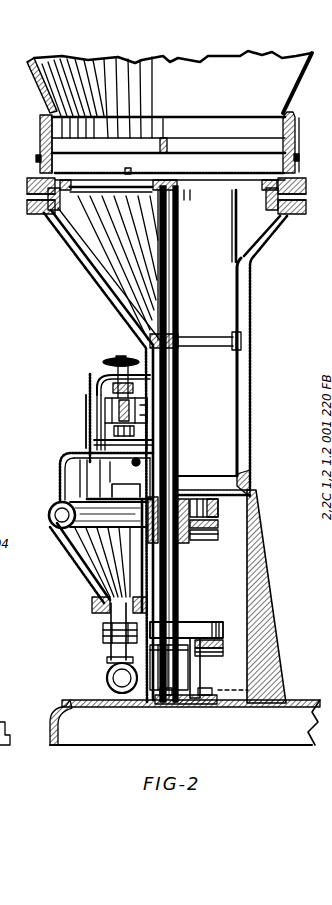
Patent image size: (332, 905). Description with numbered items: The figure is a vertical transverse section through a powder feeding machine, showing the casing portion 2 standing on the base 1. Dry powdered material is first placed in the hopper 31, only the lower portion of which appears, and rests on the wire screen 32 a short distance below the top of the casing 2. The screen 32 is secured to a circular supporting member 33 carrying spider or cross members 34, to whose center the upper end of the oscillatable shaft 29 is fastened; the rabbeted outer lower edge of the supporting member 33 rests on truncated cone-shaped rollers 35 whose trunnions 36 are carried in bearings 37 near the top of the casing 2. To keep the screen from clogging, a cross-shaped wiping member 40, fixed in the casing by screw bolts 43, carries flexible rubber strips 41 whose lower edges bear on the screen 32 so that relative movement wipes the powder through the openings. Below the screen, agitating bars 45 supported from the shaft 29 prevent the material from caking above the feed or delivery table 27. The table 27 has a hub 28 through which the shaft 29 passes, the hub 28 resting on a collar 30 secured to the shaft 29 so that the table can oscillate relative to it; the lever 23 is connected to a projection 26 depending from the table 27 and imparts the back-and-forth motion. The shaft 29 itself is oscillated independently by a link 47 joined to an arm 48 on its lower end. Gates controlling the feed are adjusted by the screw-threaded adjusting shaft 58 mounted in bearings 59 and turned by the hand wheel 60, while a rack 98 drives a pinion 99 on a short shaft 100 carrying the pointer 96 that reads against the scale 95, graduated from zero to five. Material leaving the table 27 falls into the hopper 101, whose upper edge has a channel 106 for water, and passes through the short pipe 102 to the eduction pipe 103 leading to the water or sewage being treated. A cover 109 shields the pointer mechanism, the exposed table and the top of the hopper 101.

The base 1 is at (305, 722).
The casing portion 2 is at (254, 416).
The lever 23 is at (216, 533).
The projection 26 is at (217, 512).
The feed or delivery table 27 is at (110, 497).
The hub 28 is at (145, 532).
The oscillatable shaft 29 is at (178, 412).
The collar 30 is at (183, 541).
The hopper 31 is at (33, 78).
The screen 32 is at (218, 181).
The circular supporting member 33 is at (241, 188).
The spider or cross members 34 is at (157, 188).
The truncated cone-shaped rollers 35 is at (52, 226).
The trunnions 36 is at (27, 203).
The bearings 37 is at (27, 186).
The wiping member 40 is at (184, 143).
The flexible rubber strips 41 is at (128, 171).
The screw bolts 43 is at (38, 158).
The agitating bars 45 is at (102, 263).
The link 47 is at (223, 646).
The arm 48 is at (186, 622).
The adjusting shaft 58 is at (113, 392).
The bearings 59 is at (100, 376).
The hand wheel 60 is at (108, 358).
The scale 95 is at (89, 381).
The pointer 96 is at (85, 412).
The rack 98 is at (88, 471).
The pinion 99 is at (93, 440).
The short shaft 100 is at (86, 452).
The hopper 101 is at (68, 565).
The short pipe 102 is at (110, 622).
The eduction pipe 103 is at (106, 681).
The channel 106 is at (49, 518).
The cover 109 is at (60, 485).